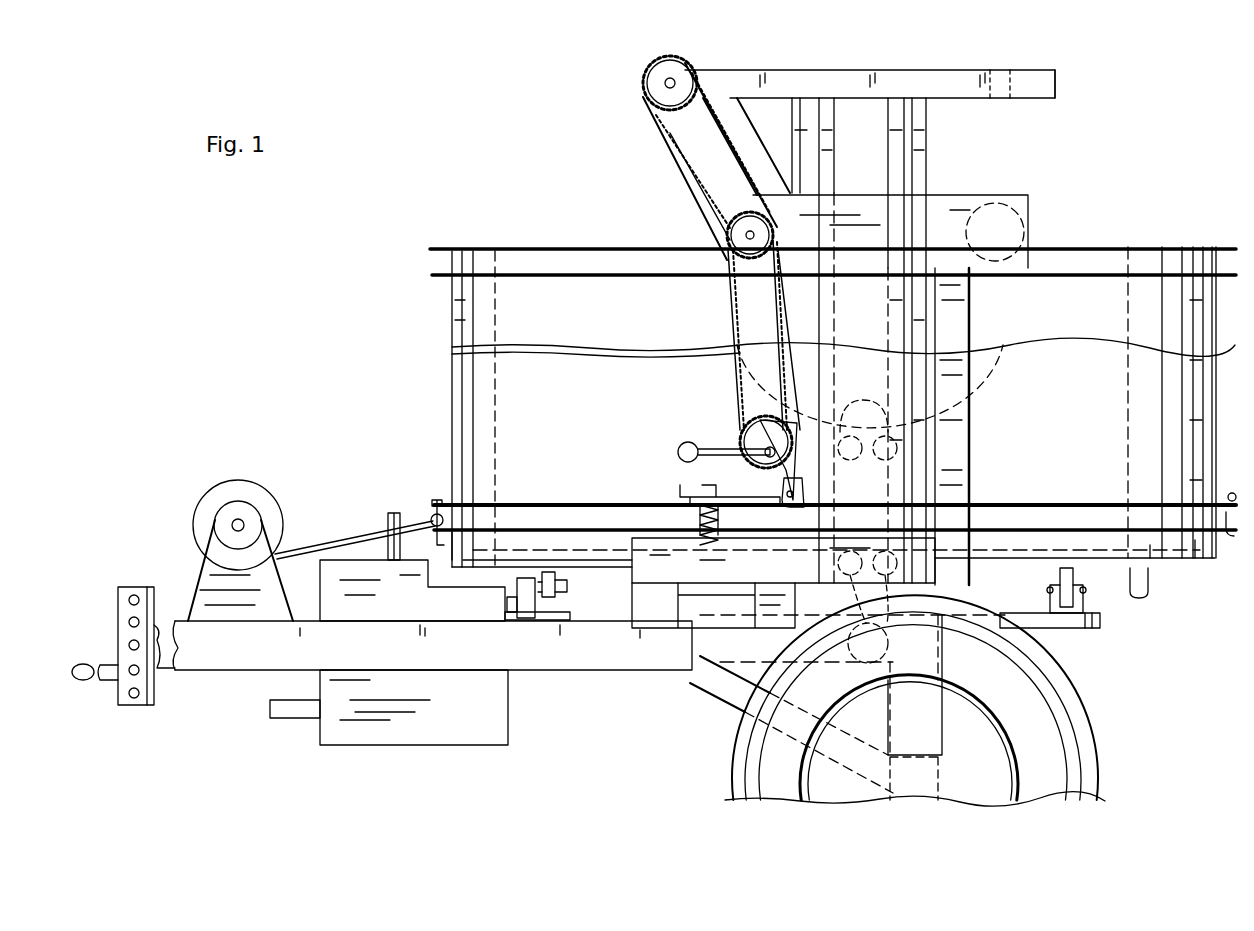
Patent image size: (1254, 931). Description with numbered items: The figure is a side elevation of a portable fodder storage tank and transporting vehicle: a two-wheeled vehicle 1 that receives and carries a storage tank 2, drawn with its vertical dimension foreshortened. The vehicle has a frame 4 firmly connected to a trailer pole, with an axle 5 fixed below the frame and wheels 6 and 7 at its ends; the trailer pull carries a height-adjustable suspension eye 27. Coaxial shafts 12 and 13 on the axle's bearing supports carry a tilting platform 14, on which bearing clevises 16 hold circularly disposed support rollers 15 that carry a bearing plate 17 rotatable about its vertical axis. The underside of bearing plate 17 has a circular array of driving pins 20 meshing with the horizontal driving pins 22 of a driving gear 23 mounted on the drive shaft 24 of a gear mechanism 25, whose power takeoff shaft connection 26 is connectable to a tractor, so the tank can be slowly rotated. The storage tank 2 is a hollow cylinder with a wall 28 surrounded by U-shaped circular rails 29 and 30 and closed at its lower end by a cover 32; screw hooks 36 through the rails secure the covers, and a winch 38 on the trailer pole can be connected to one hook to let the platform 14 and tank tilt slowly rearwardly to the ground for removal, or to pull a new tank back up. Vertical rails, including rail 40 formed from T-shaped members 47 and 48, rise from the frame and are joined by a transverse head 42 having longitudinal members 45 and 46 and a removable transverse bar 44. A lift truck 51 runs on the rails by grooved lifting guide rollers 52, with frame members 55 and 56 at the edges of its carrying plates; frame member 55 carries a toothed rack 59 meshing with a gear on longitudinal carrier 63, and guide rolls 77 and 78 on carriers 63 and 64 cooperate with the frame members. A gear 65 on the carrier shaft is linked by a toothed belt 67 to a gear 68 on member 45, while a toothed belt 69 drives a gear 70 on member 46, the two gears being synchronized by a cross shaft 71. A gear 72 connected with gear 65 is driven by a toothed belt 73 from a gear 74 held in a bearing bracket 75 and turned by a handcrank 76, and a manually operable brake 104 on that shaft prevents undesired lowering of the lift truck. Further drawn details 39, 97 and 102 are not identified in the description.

The vehicle 1 is at (611, 713).
The storage tank 2 is at (426, 417).
The frame 4 is at (615, 660).
The axle 5 is at (935, 782).
The wheel 6 is at (924, 700).
The wheel 7 is at (1060, 716).
The shaft 12 is at (870, 539).
The shaft 13 is at (835, 690).
The tilting platform 14 is at (1058, 628).
The support rollers 15 is at (1066, 575).
The bearing clevises 16 is at (1082, 606).
The bearing plate 17 is at (1195, 562).
The driving pins 20 is at (1138, 600).
The driving pins 22 is at (578, 588).
The driving gear 23 is at (528, 615).
The drive shaft 24 is at (505, 612).
The gear mechanism 25 is at (388, 735).
The power takeoff shaft connection 26 is at (295, 712).
The suspension eye 27 is at (84, 666).
The wall 28 is at (1175, 420).
The U-shaped circular rail 29 is at (1232, 243).
The U-shaped circular rail 30 is at (1232, 494).
The cover 32 is at (1152, 555).
The screw hooks 36 is at (432, 512).
The winch 38 is at (176, 529).
The rod 39 is at (338, 540).
The vertical rail 40 is at (889, 125).
The transverse head 42 is at (956, 62).
The transverse bar 44 is at (1045, 85).
The longitudinal member 45 is at (849, 311).
The longitudinal member 46 is at (833, 90).
The T-shaped member 47 is at (798, 98).
The T-shaped member 48 is at (915, 160).
The lift truck 51 is at (987, 445).
The lifting guide rollers 52 is at (880, 436).
The frame member 55 is at (748, 410).
The frame member 56 is at (972, 415).
The toothed rack 59 is at (740, 308).
The longitudinal carrier 63 is at (939, 208).
The longitudinal carrier 64 is at (1030, 203).
The gear 65 is at (692, 235).
The toothed belt 67 is at (683, 161).
The gear 68 is at (645, 75).
The toothed belt 69 is at (688, 170).
The gear 70 is at (660, 90).
The cross shaft 71 is at (672, 80).
The gear 72 is at (728, 236).
The toothed belt 73 is at (740, 378).
The gear 74 is at (758, 440).
The bearing bracket 75 is at (795, 470).
The handcrank 76 is at (680, 448).
The guide roll 77 is at (1017, 204).
The guide roll 78 is at (988, 225).
The housing 97 is at (390, 528).
The chain case 102 is at (665, 165).
The manually operable brake 104 is at (670, 498).